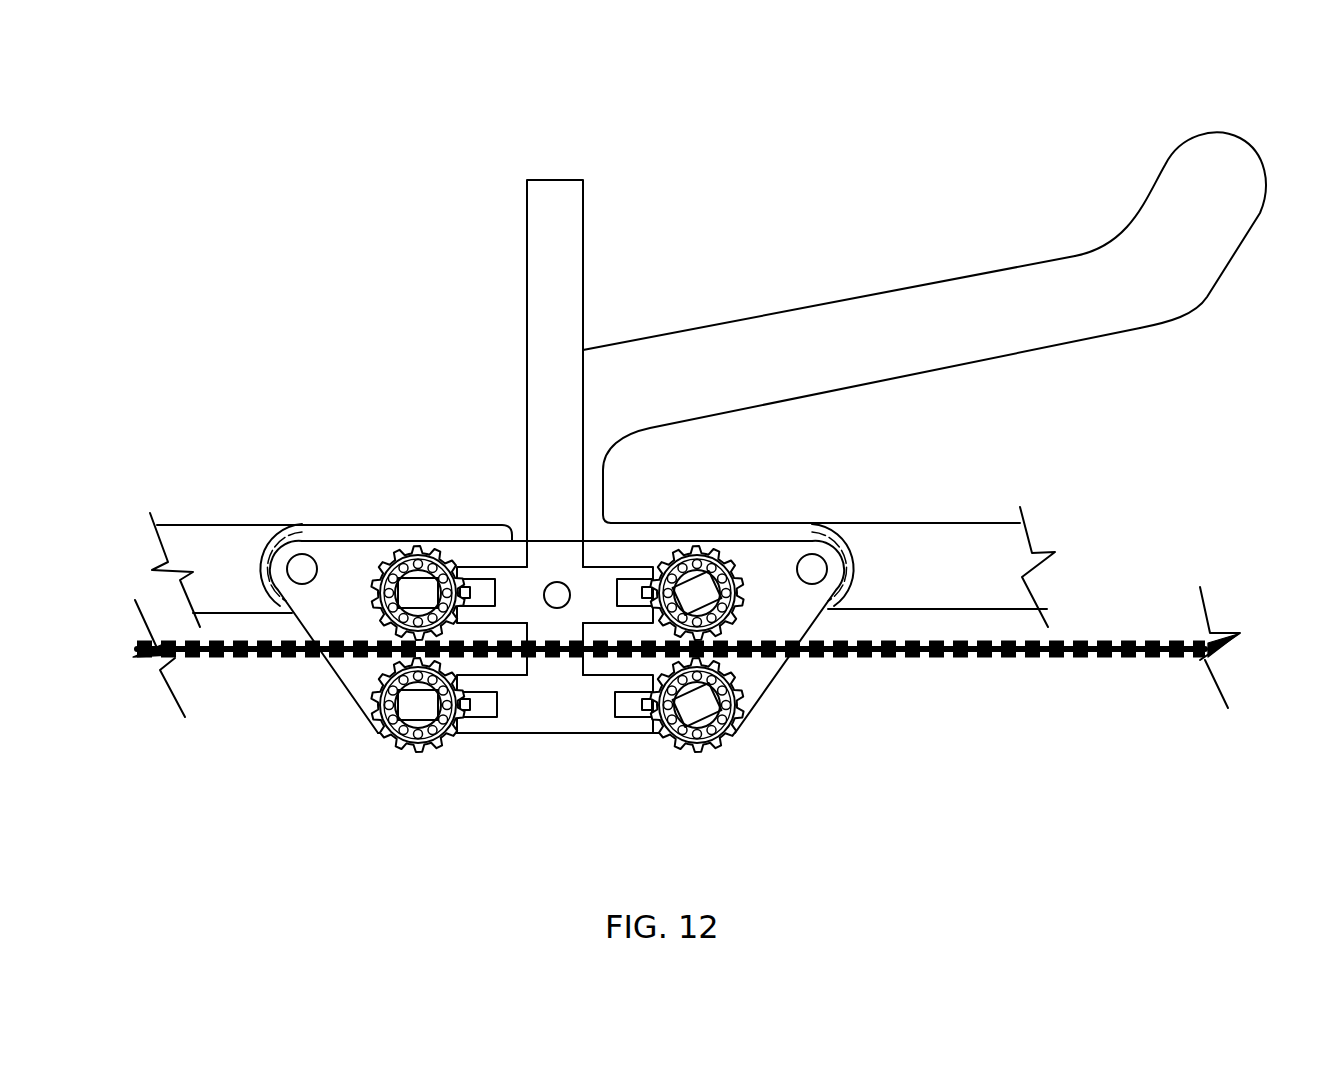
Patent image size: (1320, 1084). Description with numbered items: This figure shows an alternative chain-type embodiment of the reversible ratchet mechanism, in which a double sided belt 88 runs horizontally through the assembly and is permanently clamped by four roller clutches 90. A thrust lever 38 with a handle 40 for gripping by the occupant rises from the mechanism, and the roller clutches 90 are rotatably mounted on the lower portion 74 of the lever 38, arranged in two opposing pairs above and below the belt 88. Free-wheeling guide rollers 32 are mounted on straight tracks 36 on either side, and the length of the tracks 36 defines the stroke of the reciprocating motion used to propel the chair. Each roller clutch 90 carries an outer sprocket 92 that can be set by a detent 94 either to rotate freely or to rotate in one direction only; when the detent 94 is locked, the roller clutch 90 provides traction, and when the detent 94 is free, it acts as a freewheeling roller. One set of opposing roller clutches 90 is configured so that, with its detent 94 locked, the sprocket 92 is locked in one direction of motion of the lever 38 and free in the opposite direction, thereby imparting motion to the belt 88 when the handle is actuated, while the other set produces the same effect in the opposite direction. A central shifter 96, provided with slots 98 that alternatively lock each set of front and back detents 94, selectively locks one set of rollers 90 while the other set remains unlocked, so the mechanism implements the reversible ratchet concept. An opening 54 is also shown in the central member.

The guide rollers 32 is at (303, 548).
The straight tracks 36 is at (216, 546).
The thrust lever 38 is at (950, 274).
The handle 40 is at (1195, 173).
The aperture 54 is at (557, 592).
The lower portion 74 is at (357, 676).
The double sided belt 88 is at (1108, 637).
The roller clutches 90 is at (400, 547).
The outer sprocket 92 is at (725, 738).
The detent 94 is at (432, 590).
The shifter 96 is at (553, 262).
The slots 98 is at (487, 704).